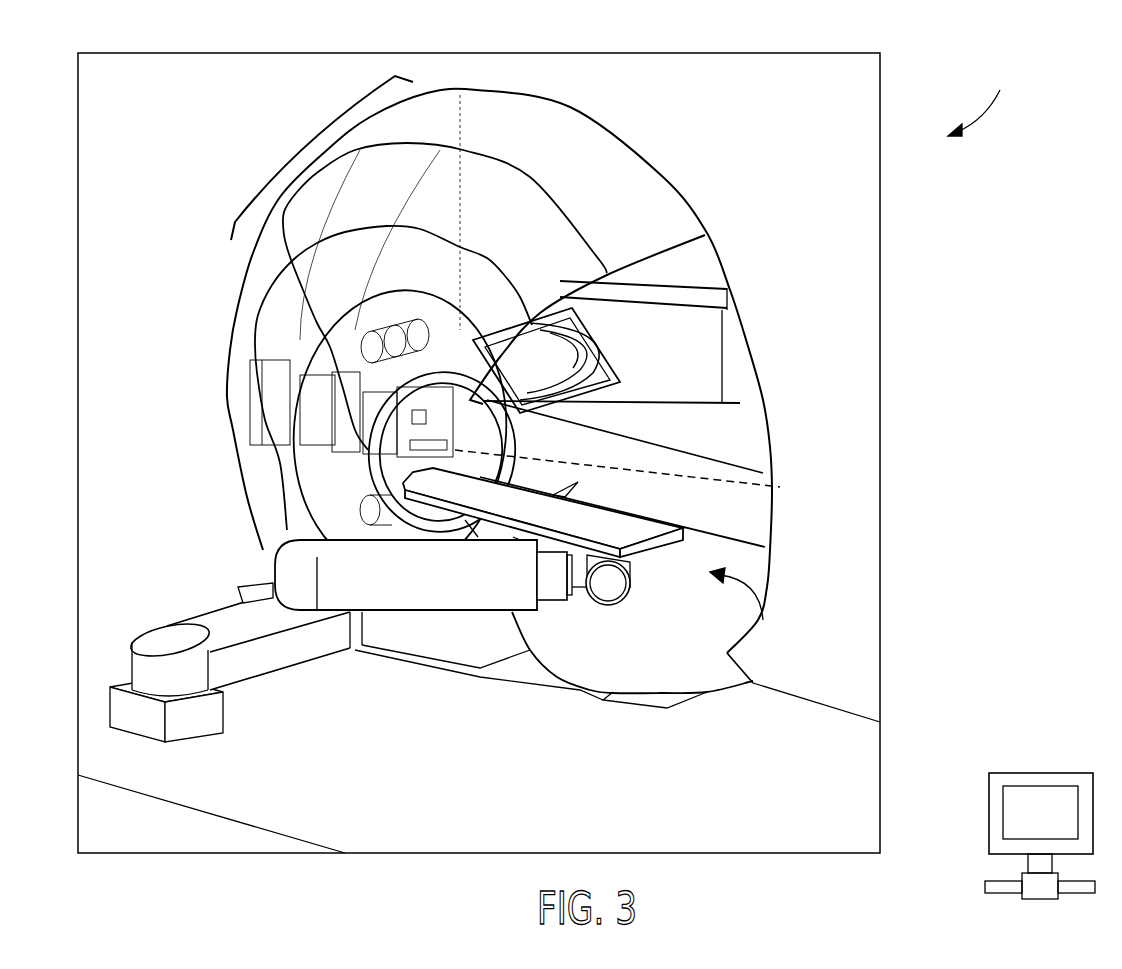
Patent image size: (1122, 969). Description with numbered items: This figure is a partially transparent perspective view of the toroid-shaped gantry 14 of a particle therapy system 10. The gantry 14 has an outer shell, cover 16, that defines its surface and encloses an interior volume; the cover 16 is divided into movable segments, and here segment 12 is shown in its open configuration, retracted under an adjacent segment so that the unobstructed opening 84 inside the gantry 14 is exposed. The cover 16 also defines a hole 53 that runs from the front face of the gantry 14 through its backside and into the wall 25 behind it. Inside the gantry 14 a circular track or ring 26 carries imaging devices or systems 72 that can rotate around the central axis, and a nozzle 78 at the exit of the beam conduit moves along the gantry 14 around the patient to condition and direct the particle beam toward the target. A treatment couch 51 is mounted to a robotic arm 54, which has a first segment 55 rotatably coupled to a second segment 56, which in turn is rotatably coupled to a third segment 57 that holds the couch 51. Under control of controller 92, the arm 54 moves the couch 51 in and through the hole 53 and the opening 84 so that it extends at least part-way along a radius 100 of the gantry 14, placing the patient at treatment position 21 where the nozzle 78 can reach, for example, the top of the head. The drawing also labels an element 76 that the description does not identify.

The particle therapy system 10 is at (982, 97).
The segment 12 is at (607, 160).
The gantry 14 is at (330, 141).
The cover 16 is at (573, 103).
The treatment position 21 is at (742, 613).
The wall 25 is at (813, 158).
The ring 26 is at (313, 482).
The treatment couch 51 is at (653, 557).
The hole 53 is at (465, 440).
The robotic arm 54 is at (195, 727).
The first segment 55 is at (167, 640).
The second segment 56 is at (273, 583).
The third segment 57 is at (612, 592).
The imaging devices or systems 72 is at (287, 392).
The imaging source 76 is at (277, 410).
The nozzle 78 is at (353, 447).
The unobstructed opening 84 is at (745, 380).
The controller 92 is at (1040, 770).
The radius 100 is at (752, 470).